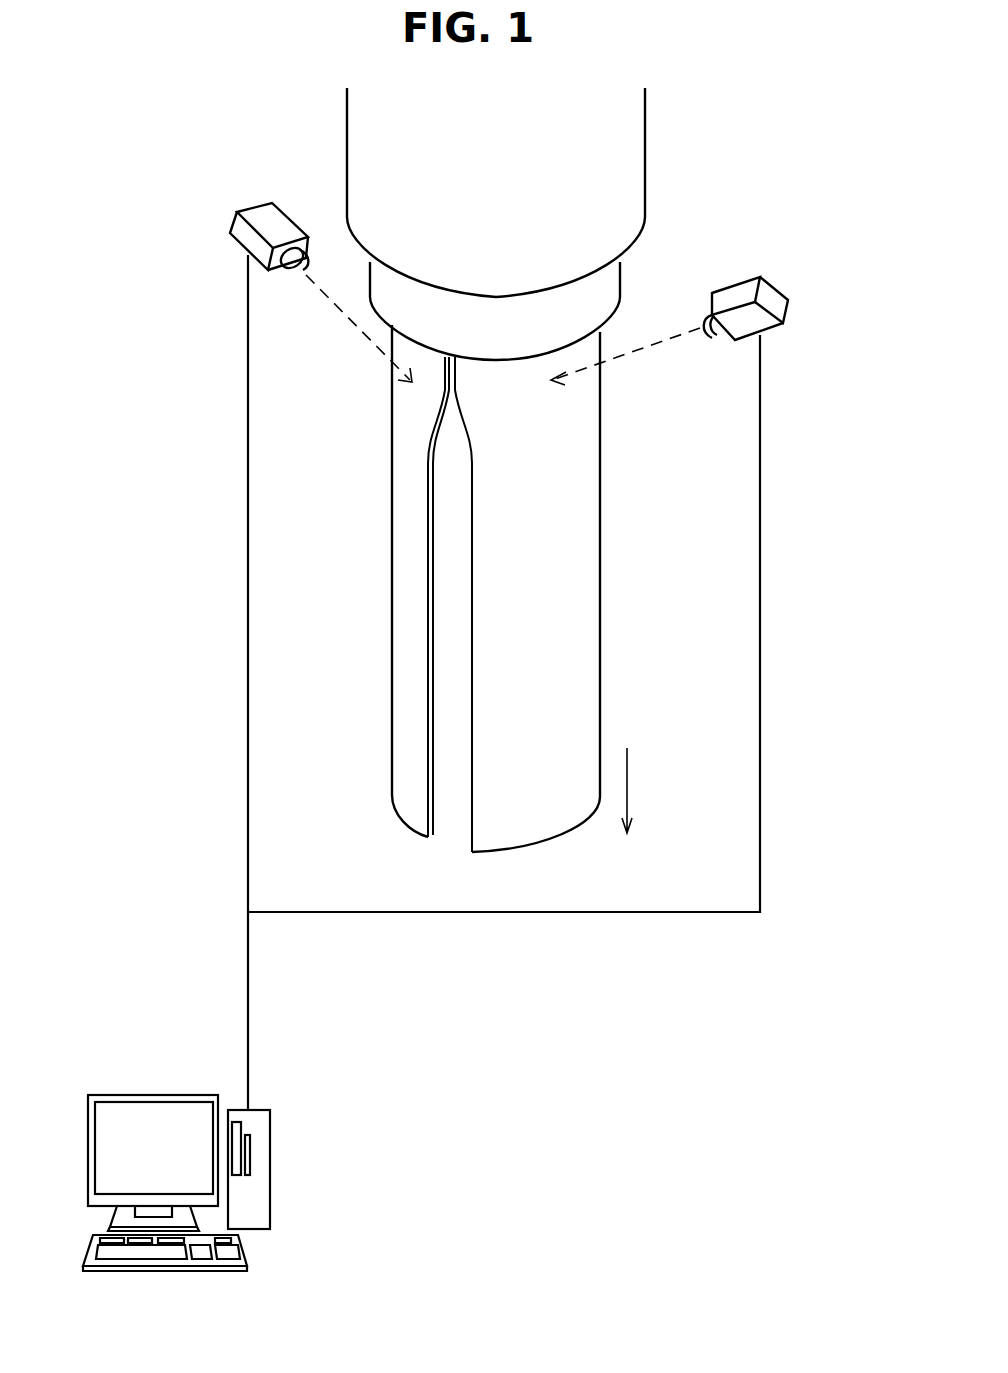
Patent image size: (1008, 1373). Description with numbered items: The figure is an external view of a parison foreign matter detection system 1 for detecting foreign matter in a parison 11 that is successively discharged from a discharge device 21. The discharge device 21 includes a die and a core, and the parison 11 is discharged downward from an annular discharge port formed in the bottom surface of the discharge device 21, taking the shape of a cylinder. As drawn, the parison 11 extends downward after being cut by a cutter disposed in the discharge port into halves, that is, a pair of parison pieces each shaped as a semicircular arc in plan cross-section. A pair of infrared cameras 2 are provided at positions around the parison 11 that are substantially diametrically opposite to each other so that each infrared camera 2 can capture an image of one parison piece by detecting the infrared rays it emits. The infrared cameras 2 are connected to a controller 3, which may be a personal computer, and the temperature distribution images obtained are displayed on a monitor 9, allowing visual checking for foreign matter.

The parison foreign matter detection system 1 is at (203, 454).
The infrared camera 2 is at (259, 214).
The discharge device 21 is at (356, 124).
The parison 11 is at (573, 580).
The monitor 9 is at (163, 1095).
The controller 3 is at (270, 1152).